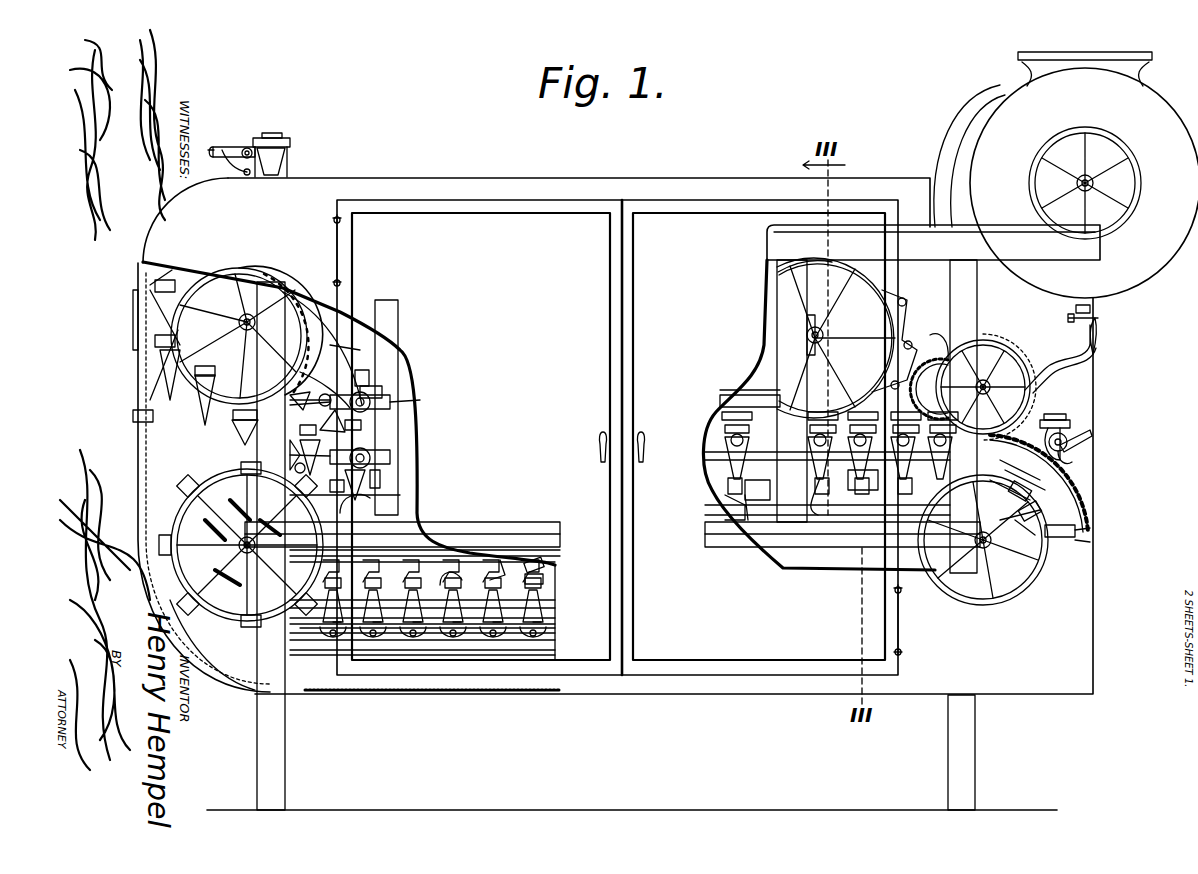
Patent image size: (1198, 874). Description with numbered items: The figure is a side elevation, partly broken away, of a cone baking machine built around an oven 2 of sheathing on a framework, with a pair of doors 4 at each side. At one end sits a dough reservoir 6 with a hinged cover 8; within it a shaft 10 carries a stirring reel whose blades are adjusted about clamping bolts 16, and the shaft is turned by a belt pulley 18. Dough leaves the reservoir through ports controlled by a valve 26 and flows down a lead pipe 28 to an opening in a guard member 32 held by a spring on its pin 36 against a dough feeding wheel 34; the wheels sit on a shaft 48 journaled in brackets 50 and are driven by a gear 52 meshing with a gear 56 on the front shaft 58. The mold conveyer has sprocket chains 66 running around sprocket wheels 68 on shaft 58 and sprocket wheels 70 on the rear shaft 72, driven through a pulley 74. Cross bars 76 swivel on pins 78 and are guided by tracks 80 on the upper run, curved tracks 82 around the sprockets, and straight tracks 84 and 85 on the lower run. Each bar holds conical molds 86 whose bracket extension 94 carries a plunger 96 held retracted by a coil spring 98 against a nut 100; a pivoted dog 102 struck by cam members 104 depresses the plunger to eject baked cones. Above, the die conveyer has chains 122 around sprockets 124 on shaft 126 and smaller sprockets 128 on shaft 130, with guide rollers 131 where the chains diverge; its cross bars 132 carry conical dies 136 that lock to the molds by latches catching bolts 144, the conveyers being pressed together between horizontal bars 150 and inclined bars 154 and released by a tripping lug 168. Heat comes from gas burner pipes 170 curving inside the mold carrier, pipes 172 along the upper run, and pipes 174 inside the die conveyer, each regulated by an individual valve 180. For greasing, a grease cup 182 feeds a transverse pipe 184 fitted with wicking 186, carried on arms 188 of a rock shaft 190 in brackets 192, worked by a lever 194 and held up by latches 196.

The oven 2 is at (520, 198).
The doors 4 is at (428, 215).
The dough reservoir 6 is at (1148, 98).
The hinged cover 8 is at (1150, 55).
The shaft 10 is at (1094, 190).
The clamping bolts 16 is at (948, 110).
The belt pulley 18 is at (1137, 170).
The valve 26 is at (1092, 317).
The lead pipe 28 is at (1097, 340).
The guard member 32 is at (1005, 358).
The dough feeding wheel 34 is at (993, 345).
The pin 36 is at (1040, 372).
The shaft 48 is at (978, 386).
The brackets 50 is at (945, 372).
The gear 52 is at (945, 345).
The gear 56 is at (1075, 535).
The front shaft 58 is at (978, 537).
The sprocket chains 66 is at (468, 642).
The sprocket wheels 68 is at (1040, 508).
The sprocket wheels 70 is at (237, 640).
The shaft 72 is at (402, 533).
The pulley 74 is at (1027, 594).
The cross bars 76 is at (542, 620).
The pins 78 is at (535, 645).
The tracks 80 is at (718, 438).
The curved tracks 82 is at (190, 490).
The straight tracks 84 is at (442, 650).
The straight tracks 85 is at (315, 640).
The molds 86 is at (545, 600).
The bracket extension 94 is at (505, 565).
The plunger 96 is at (420, 590).
The coil spring 98 is at (765, 556).
The nut 100 is at (740, 525).
The dog 102 is at (512, 565).
The cam members 104 is at (382, 562).
The chains 122 is at (300, 372).
The sprockets 124 is at (832, 283).
The shaft 126 is at (810, 330).
The sprockets 128 is at (228, 305).
The shaft 130 is at (251, 315).
The guide rollers 131 is at (390, 397).
The cross bars 132 is at (140, 323).
The conical dies 136 is at (140, 373).
The bolts 144 is at (868, 385).
The horizontal bars 150 is at (765, 420).
The inclined bars 154 is at (760, 452).
The tripping lug 168 is at (370, 375).
The gas burner pipes 170 is at (472, 600).
The pipes 172 is at (395, 478).
The pipes 174 is at (745, 395).
The individual valve 180 is at (355, 347).
The grease cup 182 is at (290, 152).
The pipe 184 is at (1052, 420).
The wicking 186 is at (282, 173).
The arms 188 is at (288, 140).
The rock shaft 190 is at (262, 150).
The brackets 192 is at (247, 172).
The lever 194 is at (243, 148).
The latches 196 is at (222, 148).